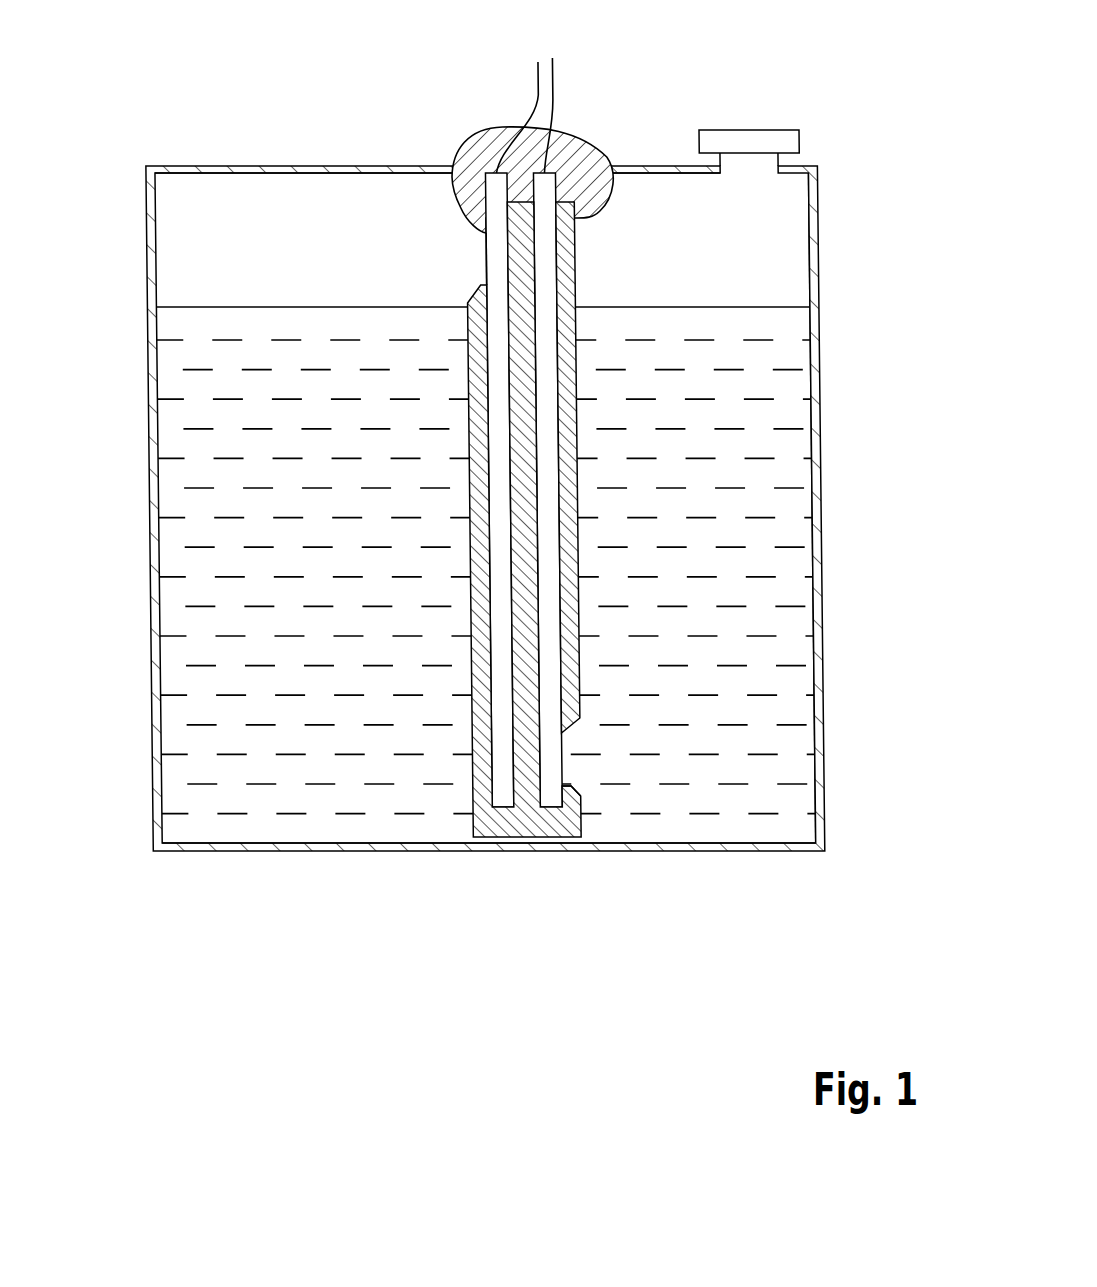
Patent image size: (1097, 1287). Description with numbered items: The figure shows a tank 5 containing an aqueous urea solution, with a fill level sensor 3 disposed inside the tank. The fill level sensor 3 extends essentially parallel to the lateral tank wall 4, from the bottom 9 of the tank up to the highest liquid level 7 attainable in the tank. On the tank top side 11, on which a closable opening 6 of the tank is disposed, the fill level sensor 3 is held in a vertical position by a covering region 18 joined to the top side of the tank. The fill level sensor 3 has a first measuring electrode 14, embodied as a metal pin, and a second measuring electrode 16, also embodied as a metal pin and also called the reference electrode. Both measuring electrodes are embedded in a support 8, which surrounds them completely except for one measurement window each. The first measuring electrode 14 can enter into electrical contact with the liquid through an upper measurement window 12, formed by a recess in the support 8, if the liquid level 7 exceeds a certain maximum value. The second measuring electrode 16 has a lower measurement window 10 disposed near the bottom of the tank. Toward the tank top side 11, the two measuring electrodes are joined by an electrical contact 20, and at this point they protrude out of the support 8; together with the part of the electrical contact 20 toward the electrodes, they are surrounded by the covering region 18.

The fill level sensor 3 is at (578, 538).
The lateral tank wall 4 is at (806, 426).
The tank 5 is at (153, 255).
The closable opening 6 is at (753, 142).
The liquid level 7 is at (764, 307).
The support 8 is at (568, 643).
The bottom 9 is at (761, 842).
The lower measurement window 10 is at (574, 782).
The tank top side 11 is at (306, 165).
The upper measurement window 12 is at (466, 235).
The first measuring electrode 14 is at (498, 807).
The second measuring electrode 16 is at (544, 807).
The covering region 18 is at (584, 157).
The electrical contact 20 is at (537, 92).